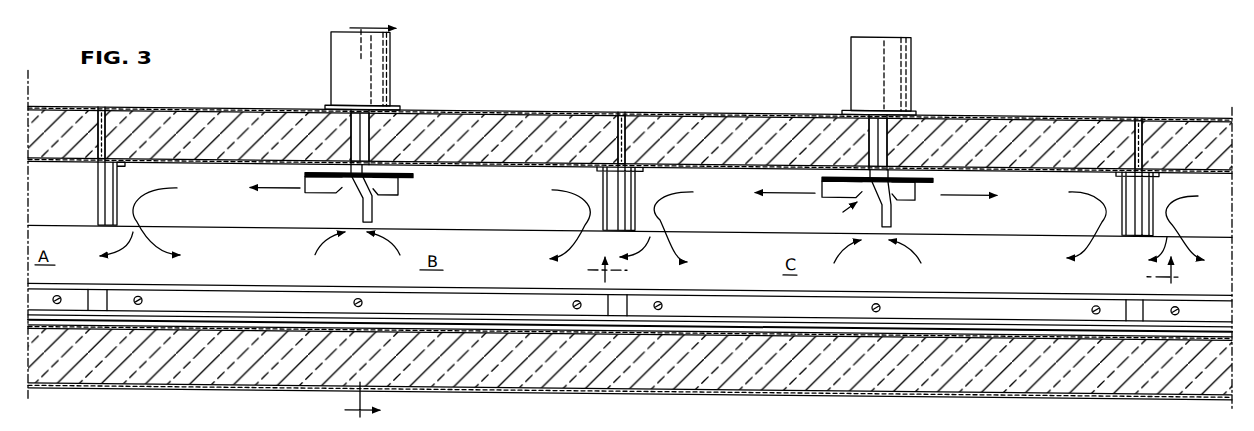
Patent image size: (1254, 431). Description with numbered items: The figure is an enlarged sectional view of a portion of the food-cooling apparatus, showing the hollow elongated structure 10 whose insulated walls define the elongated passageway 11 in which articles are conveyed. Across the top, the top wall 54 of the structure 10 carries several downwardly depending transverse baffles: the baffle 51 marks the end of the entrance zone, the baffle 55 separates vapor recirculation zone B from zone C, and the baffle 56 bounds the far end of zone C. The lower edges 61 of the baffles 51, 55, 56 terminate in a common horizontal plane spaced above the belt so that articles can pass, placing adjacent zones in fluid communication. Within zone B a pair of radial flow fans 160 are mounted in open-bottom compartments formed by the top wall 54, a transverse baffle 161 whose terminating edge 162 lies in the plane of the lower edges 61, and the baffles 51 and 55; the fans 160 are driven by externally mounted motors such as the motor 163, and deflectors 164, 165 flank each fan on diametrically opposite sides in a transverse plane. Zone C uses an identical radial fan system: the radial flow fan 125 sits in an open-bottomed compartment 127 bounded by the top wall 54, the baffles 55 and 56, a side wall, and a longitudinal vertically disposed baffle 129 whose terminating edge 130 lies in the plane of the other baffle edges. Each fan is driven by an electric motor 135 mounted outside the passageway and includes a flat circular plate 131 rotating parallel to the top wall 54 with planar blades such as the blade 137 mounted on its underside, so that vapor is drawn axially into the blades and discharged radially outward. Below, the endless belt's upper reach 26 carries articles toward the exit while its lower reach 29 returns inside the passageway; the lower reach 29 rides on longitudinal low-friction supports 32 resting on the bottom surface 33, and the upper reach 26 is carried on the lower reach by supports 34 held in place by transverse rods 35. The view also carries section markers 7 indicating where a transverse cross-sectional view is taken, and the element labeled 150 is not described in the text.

The hollow elongated structure 10 is at (222, 104).
The top wall 54 is at (527, 162).
The baffle 51 is at (117, 184).
The baffle 55 is at (637, 194).
The baffle 56 is at (1153, 193).
The lower edges 61 is at (102, 222).
The motor 163 is at (391, 78).
The electric motor 135 is at (912, 76).
The deflector 164 is at (363, 208).
The deflector 165 is at (305, 172).
The radial flow fans 160 is at (403, 183).
The terminating edge 162 is at (292, 227).
The transverse baffle 161 is at (507, 213).
The air nozzle pipe 150 is at (891, 206).
The blade 137 is at (822, 173).
The flat circular plate 131 is at (935, 172).
The radial flow fan 125 is at (839, 215).
The open-bottomed compartment 127 is at (733, 212).
The vertically disposed baffle 129 is at (762, 218).
The terminating edge 130 is at (1052, 227).
The upper reach 26 is at (215, 283).
The transverse rods 35 is at (135, 298).
The supports 34 is at (262, 298).
The lower reach 29 is at (1062, 308).
The bottom surface 33 is at (745, 322).
The supports 32 is at (1002, 325).
The section line 7- 7 is at (363, 225).
The elongated passageway 11 is at (883, 270).